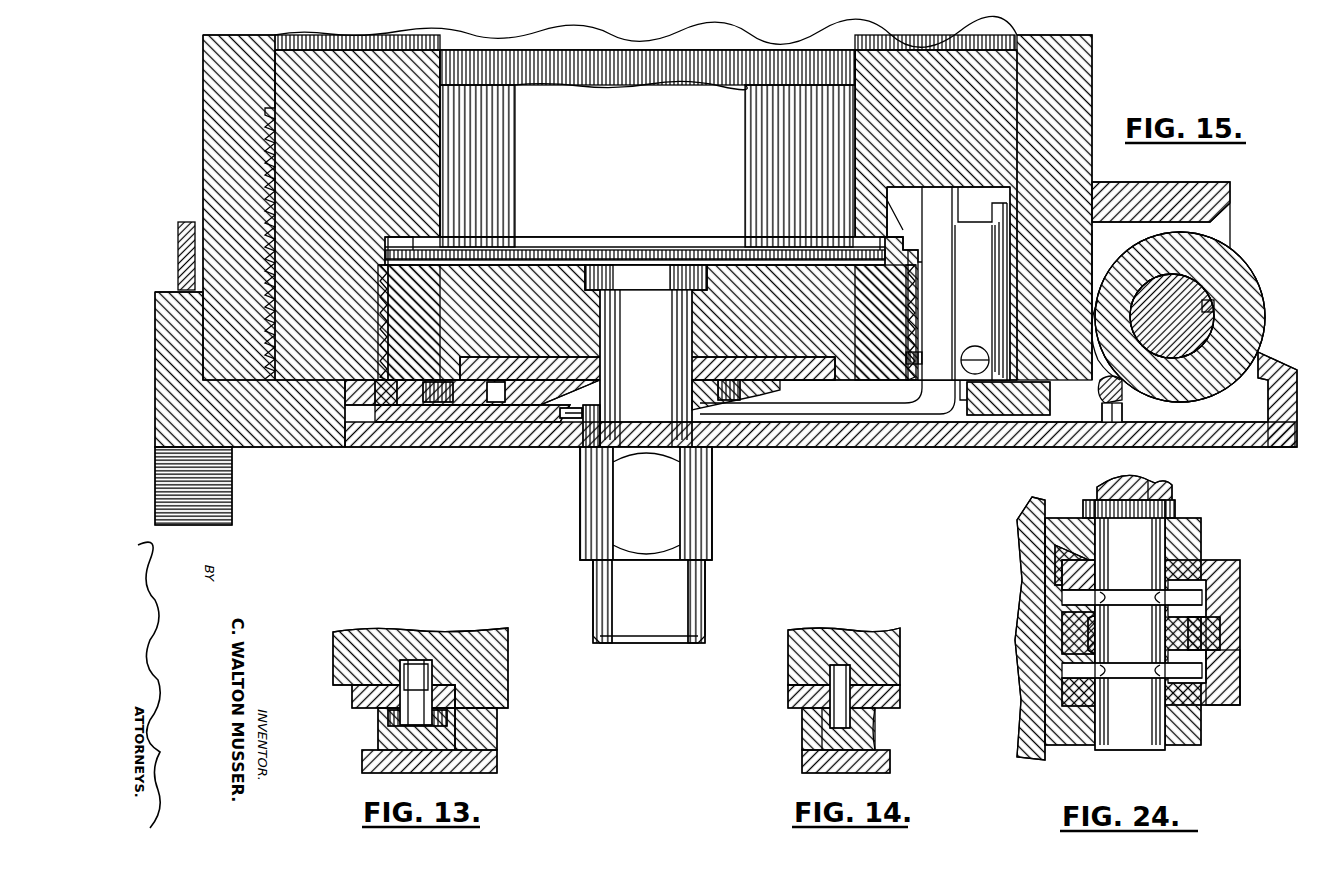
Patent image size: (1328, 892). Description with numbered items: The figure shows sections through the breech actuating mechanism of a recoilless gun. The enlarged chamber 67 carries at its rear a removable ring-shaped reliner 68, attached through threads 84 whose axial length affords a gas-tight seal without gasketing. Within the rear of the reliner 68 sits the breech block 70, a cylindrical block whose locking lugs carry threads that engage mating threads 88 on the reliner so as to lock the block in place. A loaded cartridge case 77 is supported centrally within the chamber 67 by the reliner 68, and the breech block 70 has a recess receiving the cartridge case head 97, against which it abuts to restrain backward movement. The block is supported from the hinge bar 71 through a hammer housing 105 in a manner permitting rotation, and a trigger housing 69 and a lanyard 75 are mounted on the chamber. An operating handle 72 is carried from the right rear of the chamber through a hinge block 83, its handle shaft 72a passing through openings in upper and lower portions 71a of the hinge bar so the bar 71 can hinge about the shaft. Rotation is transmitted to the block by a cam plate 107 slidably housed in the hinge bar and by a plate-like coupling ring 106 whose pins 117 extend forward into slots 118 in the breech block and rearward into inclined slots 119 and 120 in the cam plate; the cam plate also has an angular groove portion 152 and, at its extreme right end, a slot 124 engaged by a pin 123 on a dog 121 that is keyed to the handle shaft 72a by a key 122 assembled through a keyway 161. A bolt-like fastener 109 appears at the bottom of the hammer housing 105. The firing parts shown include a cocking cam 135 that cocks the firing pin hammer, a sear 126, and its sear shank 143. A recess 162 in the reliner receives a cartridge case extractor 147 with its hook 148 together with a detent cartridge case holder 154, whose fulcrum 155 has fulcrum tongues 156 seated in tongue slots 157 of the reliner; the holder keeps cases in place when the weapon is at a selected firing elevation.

In FIG. 15, the chamber 67 is at (203, 60).
In FIG. 24, the chamber 67 is at (1020, 521).
In FIG. 15, the reliner 68 is at (275, 84).
In FIG. 15, the trigger housing 69 is at (232, 476).
In FIG. 15, the breech block 70 is at (522, 272).
In FIG. 13, the breech block 70 is at (345, 642).
In FIG. 14, the breech block 70 is at (795, 642).
In FIG. 15, the hinge bar 71 is at (332, 447).
In FIG. 24, the hinge bar 71 is at (1228, 689).
In FIG. 13, the hinge bar 71 is at (372, 762).
In FIG. 14, the hinge bar 71 is at (876, 766).
In FIG. 24, the upper and lower portions of the hinge bar 71a is at (1063, 569).
In FIG. 24, the operating handle 72 is at (1095, 491).
In FIG. 15, the handle shaft 72a is at (1172, 316).
In FIG. 24, the handle shaft 72a is at (1135, 735).
In FIG. 15, the lanyard 75 is at (178, 240).
In FIG. 15, the cartridge case 77 is at (647, 143).
In FIG. 15, the hinge block 83 is at (1166, 192).
In FIG. 24, the hinge block 83 is at (1050, 598).
In FIG. 15, the threads 84 is at (270, 157).
In FIG. 15, the threads 88 is at (378, 300).
In FIG. 15, the cartridge case head 97 is at (668, 252).
In FIG. 15, the hammer housing 105 is at (605, 322).
In FIG. 15, the coupling ring 106 is at (797, 360).
In FIG. 13, the coupling ring 106 is at (352, 697).
In FIG. 14, the coupling ring 106 is at (790, 697).
In FIG. 15, the cam plate 107 is at (362, 420).
In FIG. 24, the cam plate 107 is at (1210, 597).
In FIG. 13, the cam plate 107 is at (378, 742).
In FIG. 14, the cam plate 107 is at (876, 740).
In FIG. 15, the nut 109 is at (612, 584).
In FIG. 13, the pins 117 is at (406, 674).
In FIG. 14, the pins 117 is at (838, 676).
In FIG. 13, the slots 118 is at (436, 675).
In FIG. 15, the inclined slot 119 is at (735, 378).
In FIG. 13, the inclined slot 119 is at (388, 718).
In FIG. 15, the inclined slot 120 is at (440, 382).
In FIG. 15, the dog 121 is at (1244, 285).
In FIG. 24, the dog 121 is at (1070, 626).
In FIG. 15, the key 122 is at (1202, 306).
In FIG. 24, the key 122 is at (1086, 632).
In FIG. 15, the pin 123 is at (1122, 392).
In FIG. 15, the slot 124 is at (1110, 424).
In FIG. 15, the sear 126 is at (590, 446).
In FIG. 15, the cocking cam 135 is at (446, 422).
In FIG. 15, the sear shank 143 is at (580, 430).
In FIG. 15, the cartridge case extractor 147 is at (930, 252).
In FIG. 15, the hook 148 is at (915, 245).
In FIG. 15, the angular groove portion 152 is at (770, 392).
In FIG. 15, the detent cartridge case holder 154 is at (1003, 196).
In FIG. 15, the fulcrum 155 is at (957, 404).
In FIG. 15, the fulcrum tongues 156 is at (975, 352).
In FIG. 15, the tongue slots 157 is at (906, 357).
In FIG. 24, the slot or keyway 161 is at (1093, 572).
In FIG. 15, the recess 162 is at (966, 210).